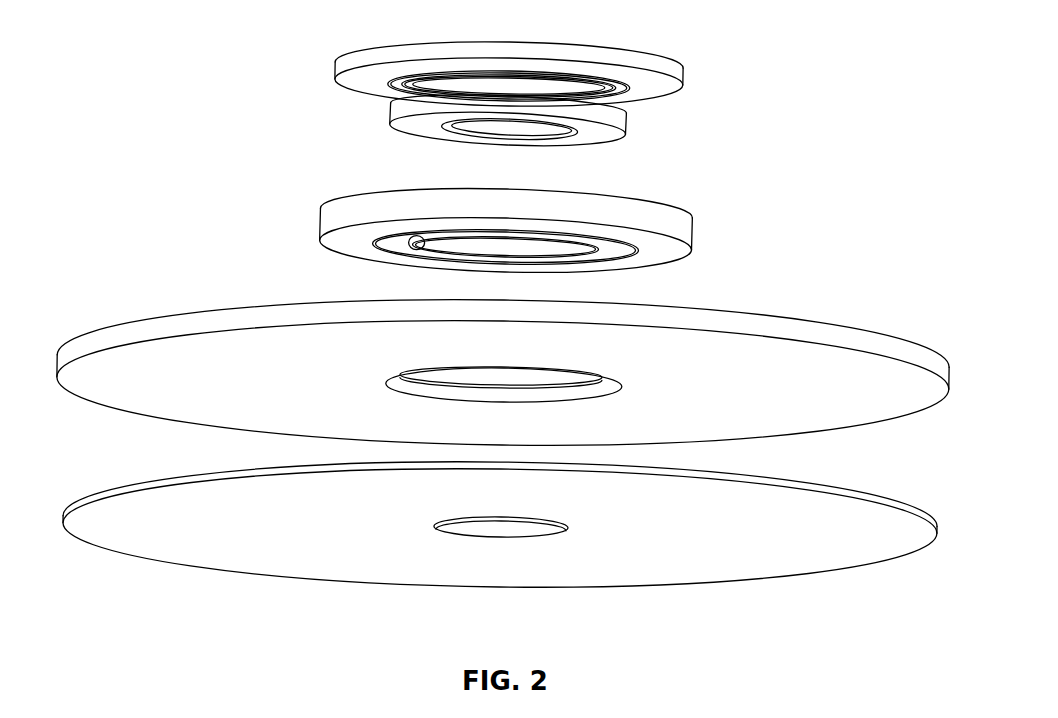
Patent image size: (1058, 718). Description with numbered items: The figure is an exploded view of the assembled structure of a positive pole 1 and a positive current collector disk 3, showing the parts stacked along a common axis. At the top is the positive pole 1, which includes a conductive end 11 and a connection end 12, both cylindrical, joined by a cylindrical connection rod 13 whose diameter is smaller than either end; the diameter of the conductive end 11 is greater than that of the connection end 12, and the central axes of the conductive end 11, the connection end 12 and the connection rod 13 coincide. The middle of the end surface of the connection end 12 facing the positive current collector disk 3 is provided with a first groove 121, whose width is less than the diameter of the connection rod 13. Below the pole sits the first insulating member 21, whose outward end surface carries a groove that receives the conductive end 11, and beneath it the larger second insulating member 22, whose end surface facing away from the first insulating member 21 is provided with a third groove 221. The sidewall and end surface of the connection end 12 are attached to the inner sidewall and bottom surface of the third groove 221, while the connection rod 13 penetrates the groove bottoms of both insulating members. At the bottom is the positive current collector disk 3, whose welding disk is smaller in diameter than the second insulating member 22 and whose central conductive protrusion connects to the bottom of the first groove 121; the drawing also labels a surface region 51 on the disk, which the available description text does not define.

The positive pole 1 is at (344, 67).
The conductive end 11 is at (672, 73).
The connection end 12 is at (598, 117).
The first groove 121 is at (530, 132).
The connection rod 13 is at (442, 90).
The first insulating member 21 is at (684, 230).
The second insulating member 22 is at (851, 341).
The third groove 221 is at (416, 388).
The positive current collector disk 3 is at (858, 510).
The top surface of cover plate 51 is at (148, 512).